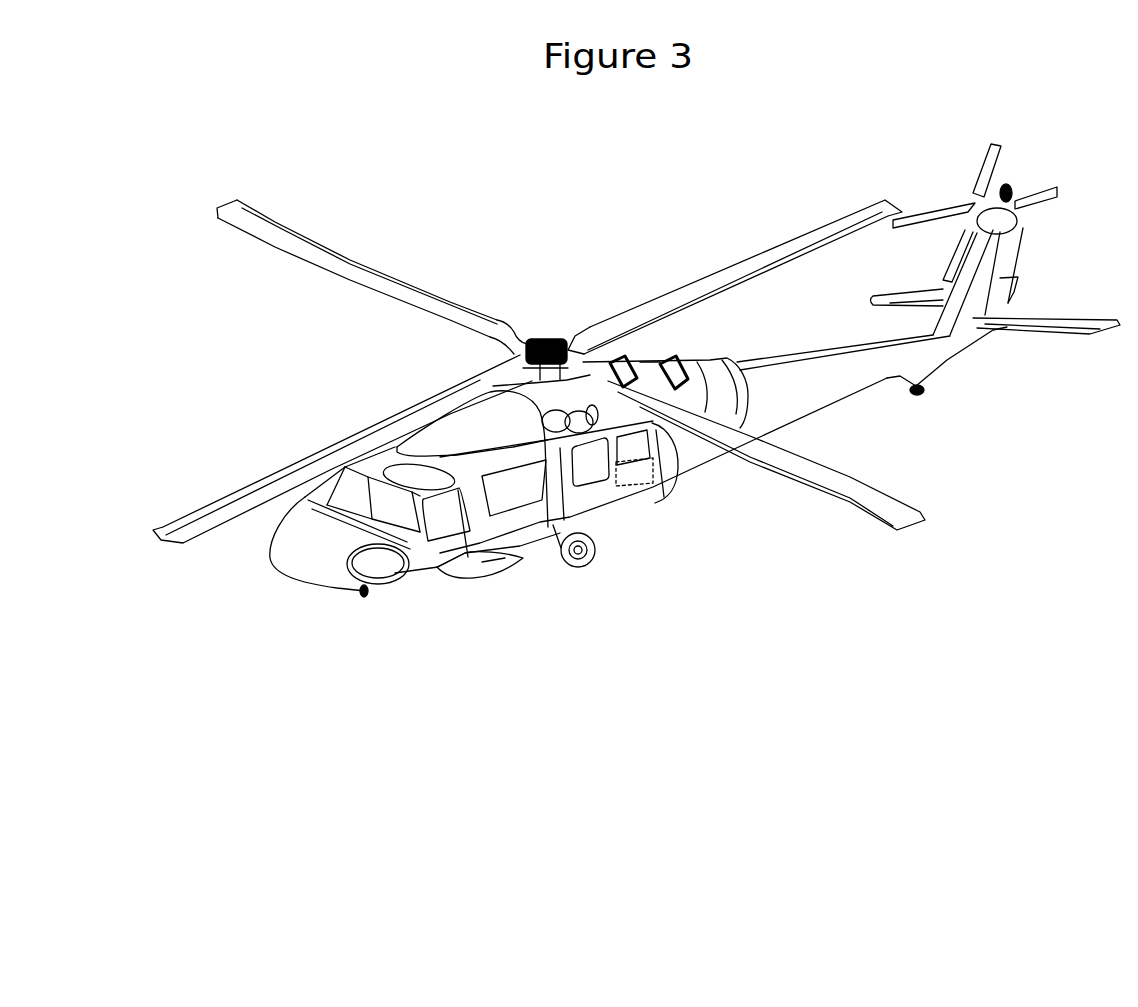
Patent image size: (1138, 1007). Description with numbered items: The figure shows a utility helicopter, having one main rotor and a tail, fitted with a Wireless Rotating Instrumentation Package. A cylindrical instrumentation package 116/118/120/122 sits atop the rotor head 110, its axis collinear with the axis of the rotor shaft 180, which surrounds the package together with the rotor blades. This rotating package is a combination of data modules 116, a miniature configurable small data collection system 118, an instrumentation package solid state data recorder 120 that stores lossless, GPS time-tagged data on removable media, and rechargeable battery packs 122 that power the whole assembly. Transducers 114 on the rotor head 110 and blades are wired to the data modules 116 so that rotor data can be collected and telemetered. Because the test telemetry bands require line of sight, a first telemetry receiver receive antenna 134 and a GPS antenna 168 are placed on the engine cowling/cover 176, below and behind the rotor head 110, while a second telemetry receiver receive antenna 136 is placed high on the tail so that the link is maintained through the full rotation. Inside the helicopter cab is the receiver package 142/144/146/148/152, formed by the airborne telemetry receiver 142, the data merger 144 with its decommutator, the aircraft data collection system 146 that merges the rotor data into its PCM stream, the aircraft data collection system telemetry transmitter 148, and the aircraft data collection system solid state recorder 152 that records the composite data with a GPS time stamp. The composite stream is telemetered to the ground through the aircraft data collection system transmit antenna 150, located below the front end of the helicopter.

The rotor head 110 is at (563, 377).
The transducers 114 is at (283, 224).
The data modules 116 is at (560, 275).
The small data collection system 118 is at (560, 275).
The instrumentation package solid state data recorder 120 is at (560, 275).
The rechargeable battery packs 122 is at (548, 333).
The first telemetry receiver receive antenna 134 is at (623, 356).
The second telemetry receiver receive antenna 136 is at (1006, 188).
The airborne telemetry receiver 142 is at (778, 604).
The data merger 144 is at (778, 604).
The aircraft data collection system 146 is at (778, 604).
The aircraft data collection system telemetry transmitter 148 is at (778, 604).
The aircraft data collection system solid state recorder 152 is at (661, 495).
The aircraft data collection system transmit antenna 150 is at (366, 599).
The GPS antenna 168 is at (677, 357).
The engine cowling/cover 176 is at (650, 356).
The rotor shaft 180 is at (540, 378).